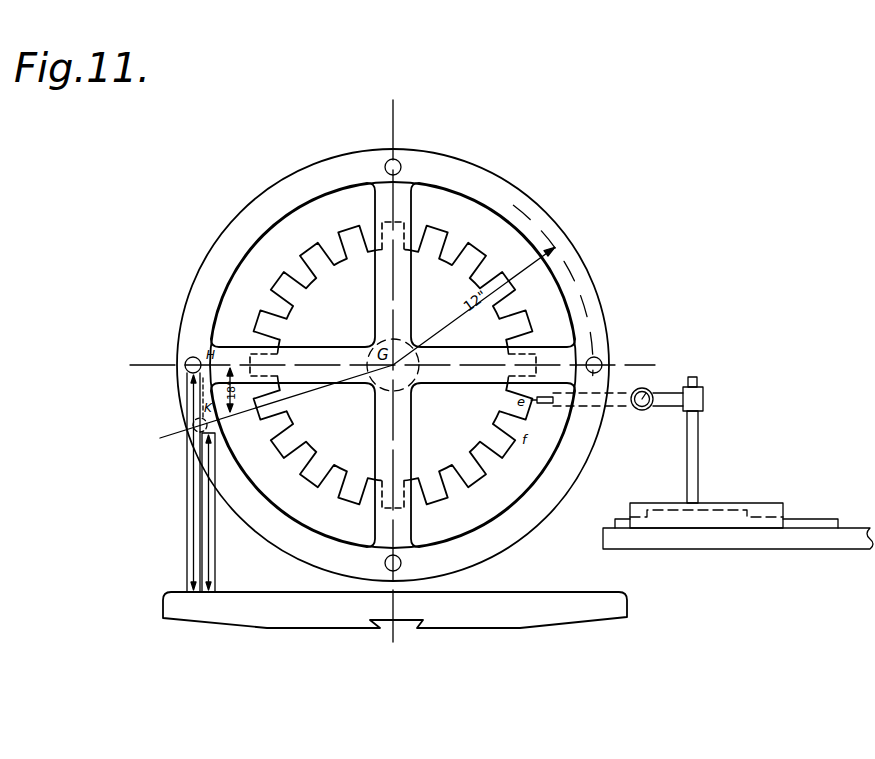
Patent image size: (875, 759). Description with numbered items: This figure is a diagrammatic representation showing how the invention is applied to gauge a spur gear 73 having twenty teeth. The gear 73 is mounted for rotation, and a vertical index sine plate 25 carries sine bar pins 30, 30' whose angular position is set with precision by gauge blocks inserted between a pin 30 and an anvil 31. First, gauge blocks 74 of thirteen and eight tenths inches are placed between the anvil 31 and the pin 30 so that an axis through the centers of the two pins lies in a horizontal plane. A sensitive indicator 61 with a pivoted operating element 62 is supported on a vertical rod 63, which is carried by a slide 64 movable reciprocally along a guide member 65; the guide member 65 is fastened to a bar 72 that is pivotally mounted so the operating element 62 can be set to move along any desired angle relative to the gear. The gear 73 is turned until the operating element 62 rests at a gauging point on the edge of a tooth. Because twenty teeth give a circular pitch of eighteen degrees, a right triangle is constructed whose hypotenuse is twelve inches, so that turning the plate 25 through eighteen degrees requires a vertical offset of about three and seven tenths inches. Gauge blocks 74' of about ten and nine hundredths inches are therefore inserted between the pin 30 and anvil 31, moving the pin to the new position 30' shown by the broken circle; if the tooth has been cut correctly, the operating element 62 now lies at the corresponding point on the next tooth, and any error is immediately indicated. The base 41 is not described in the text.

The vertical index sine plate 25 is at (250, 200).
The sine bar pin 30 is at (396, 354).
The sine bar pin (new position) 30' is at (379, 346).
The spur gear 73 is at (341, 314).
The gauge blocks 74 is at (173, 482).
The gauge blocks 74' is at (229, 512).
The anvil 31 is at (201, 621).
The sensitive indicator 61 is at (645, 389).
The pivoted operating element 62 is at (549, 405).
The vertical rod 63 is at (699, 428).
The slide 64 is at (731, 503).
The guide member 65 is at (770, 503).
The bar 72 is at (838, 519).
The bed 41 is at (778, 550).